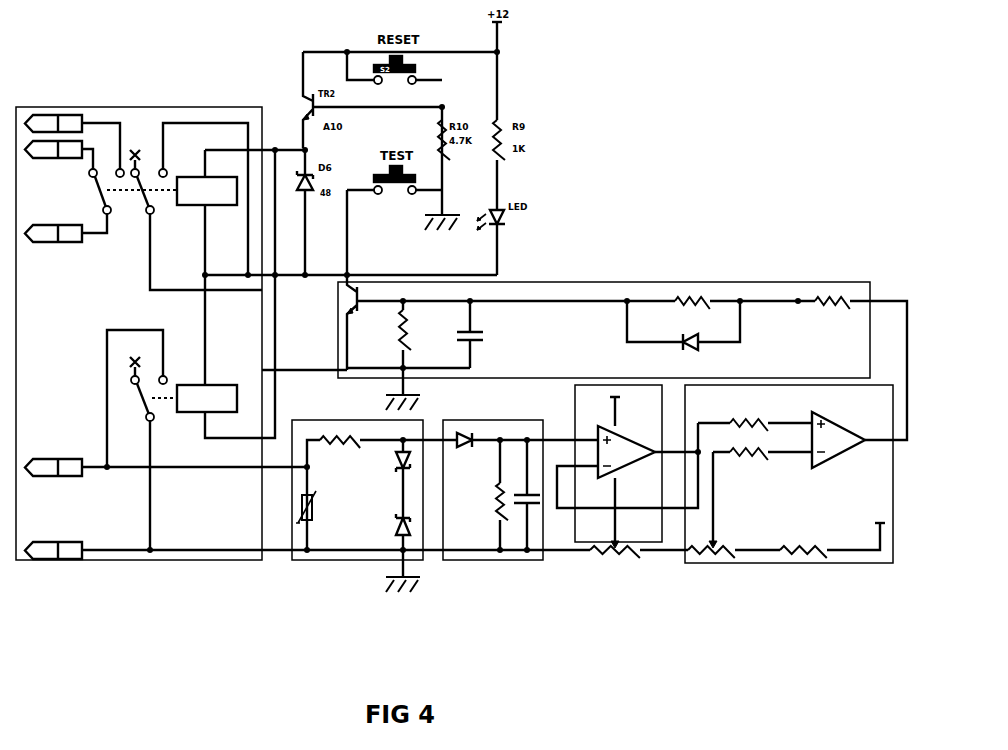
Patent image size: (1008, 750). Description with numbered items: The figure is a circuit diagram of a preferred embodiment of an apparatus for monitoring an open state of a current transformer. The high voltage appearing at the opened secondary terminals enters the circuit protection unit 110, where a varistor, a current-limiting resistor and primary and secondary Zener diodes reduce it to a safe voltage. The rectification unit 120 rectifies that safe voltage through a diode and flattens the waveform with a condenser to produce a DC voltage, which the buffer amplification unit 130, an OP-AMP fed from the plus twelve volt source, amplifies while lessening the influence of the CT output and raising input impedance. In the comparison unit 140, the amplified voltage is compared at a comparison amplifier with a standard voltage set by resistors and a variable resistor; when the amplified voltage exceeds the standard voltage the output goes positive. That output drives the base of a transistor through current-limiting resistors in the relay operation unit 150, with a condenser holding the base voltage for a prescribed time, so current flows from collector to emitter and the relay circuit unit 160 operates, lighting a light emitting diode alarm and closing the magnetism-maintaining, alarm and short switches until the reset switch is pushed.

The circuit protection unit 110 is at (357, 560).
The rectification unit 120 is at (508, 560).
The buffer amplification unit 130 is at (637, 545).
The comparison unit 140 is at (757, 563).
The relay operation unit 150 is at (775, 282).
The relay circuit unit 160 is at (177, 560).